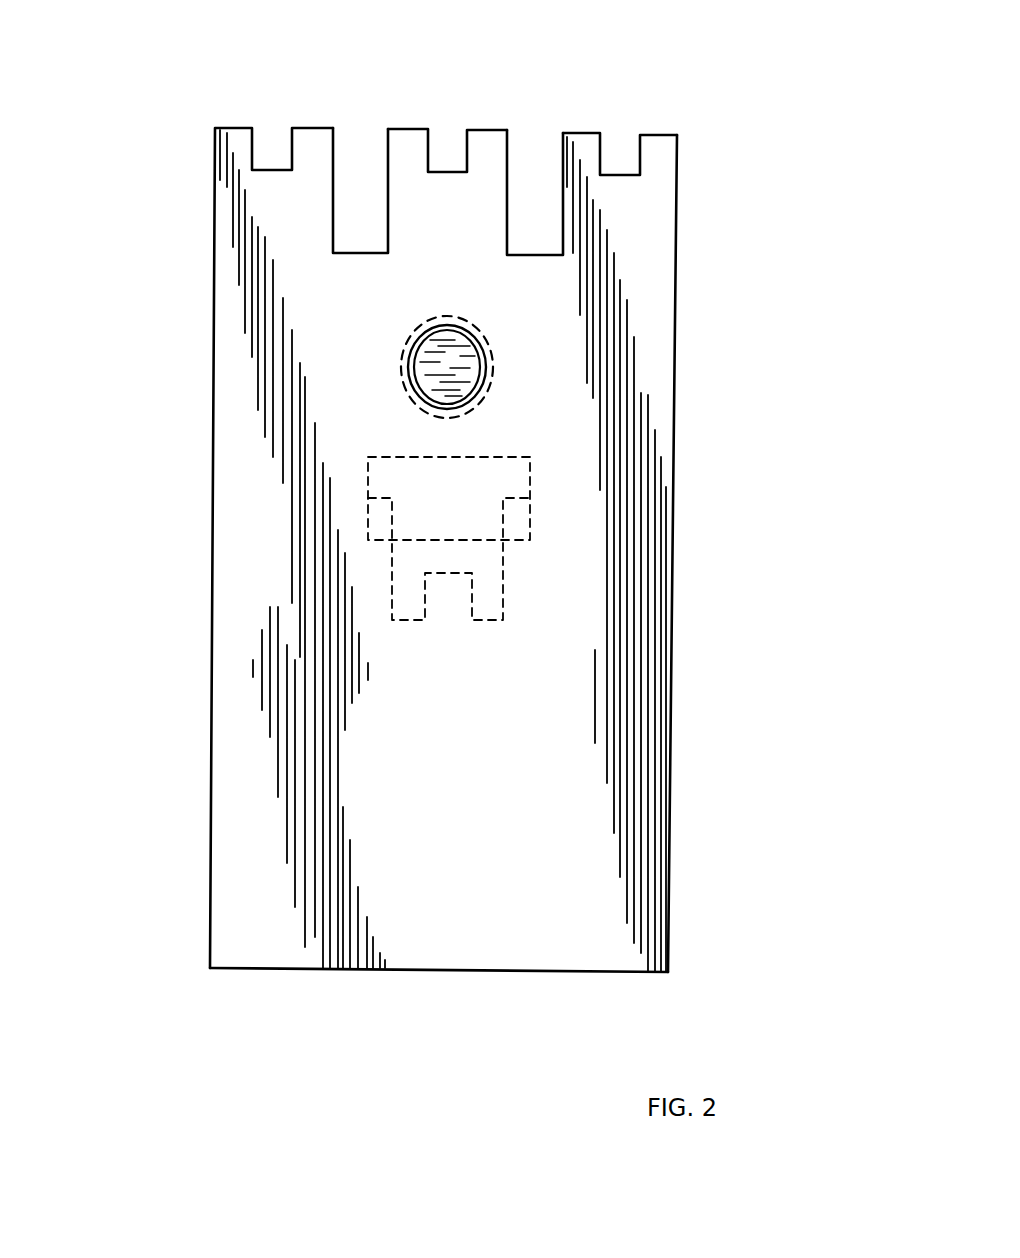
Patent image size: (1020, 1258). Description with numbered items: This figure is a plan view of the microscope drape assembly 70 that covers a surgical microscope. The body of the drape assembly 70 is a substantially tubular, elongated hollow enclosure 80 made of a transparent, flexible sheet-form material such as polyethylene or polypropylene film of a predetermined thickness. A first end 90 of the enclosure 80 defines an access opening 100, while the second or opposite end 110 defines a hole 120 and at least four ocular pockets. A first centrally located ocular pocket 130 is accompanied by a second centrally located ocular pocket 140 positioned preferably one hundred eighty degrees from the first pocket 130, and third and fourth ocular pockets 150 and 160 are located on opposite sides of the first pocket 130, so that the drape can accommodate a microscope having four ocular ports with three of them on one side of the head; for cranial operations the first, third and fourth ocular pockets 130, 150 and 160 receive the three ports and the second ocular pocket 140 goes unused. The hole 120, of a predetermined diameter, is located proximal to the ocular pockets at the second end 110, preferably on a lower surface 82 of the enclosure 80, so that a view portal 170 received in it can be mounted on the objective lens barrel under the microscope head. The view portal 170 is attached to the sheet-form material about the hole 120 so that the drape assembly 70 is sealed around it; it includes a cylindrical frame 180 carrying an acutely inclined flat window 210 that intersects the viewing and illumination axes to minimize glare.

The microscope drape assembly 70 is at (733, 215).
The elongated hollow enclosure 80 is at (677, 368).
The lower surface 82 is at (528, 378).
The first end 90 is at (230, 987).
The access opening 100 is at (292, 968).
The second end 110 is at (193, 130).
The hole 120 is at (477, 325).
The first ocular pocket 130 is at (510, 160).
The second ocular pocket 140 is at (505, 568).
The third ocular pocket 150 is at (335, 160).
The fourth ocular pocket 160 is at (675, 162).
The view portal 170 is at (492, 402).
The cylindrical frame 180 is at (408, 385).
The flat window 210 is at (412, 358).